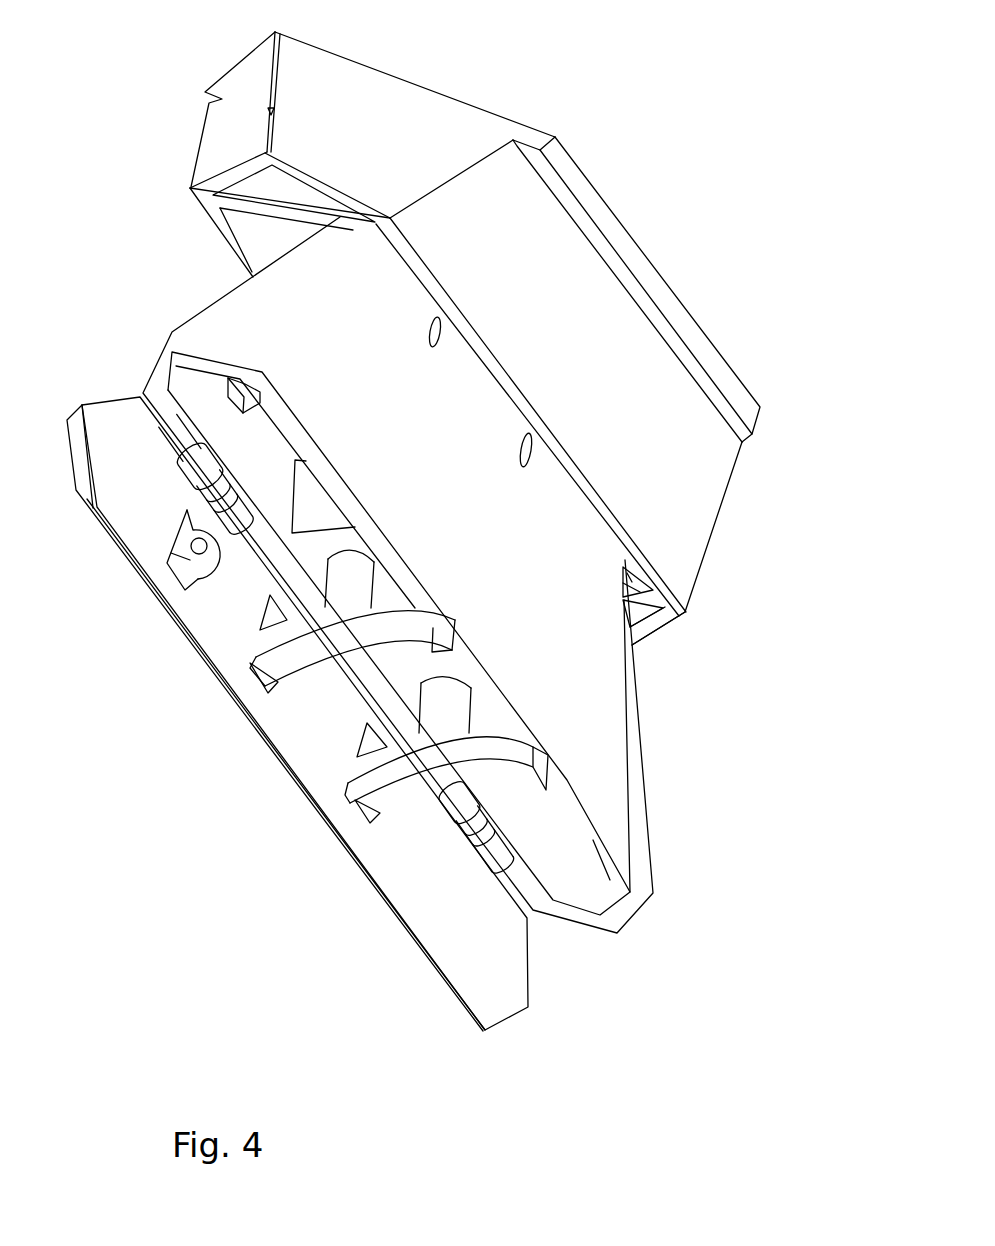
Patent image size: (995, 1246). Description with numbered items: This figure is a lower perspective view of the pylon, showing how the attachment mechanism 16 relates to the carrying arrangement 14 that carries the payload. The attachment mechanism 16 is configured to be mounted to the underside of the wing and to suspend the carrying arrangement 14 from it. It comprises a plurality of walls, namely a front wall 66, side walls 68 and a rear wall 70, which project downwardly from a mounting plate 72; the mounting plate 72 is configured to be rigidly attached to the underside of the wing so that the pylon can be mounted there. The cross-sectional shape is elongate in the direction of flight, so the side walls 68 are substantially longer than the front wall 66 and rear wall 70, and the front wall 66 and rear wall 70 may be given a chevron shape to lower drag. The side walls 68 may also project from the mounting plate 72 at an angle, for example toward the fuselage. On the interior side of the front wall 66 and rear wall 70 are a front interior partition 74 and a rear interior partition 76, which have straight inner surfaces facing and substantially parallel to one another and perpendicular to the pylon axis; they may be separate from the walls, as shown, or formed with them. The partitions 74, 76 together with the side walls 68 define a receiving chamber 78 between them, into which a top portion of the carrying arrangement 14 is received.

The carrying arrangement 14 is at (668, 758).
The attachment mechanism 16 is at (463, 332).
The front wall 66 is at (340, 92).
The side wall 68 is at (540, 267).
The rear wall 70 is at (656, 633).
The mounting plate 72 is at (560, 160).
The front interior partition 74 is at (232, 203).
The rear interior partition 76 is at (647, 600).
The receiving chamber 78 is at (293, 237).